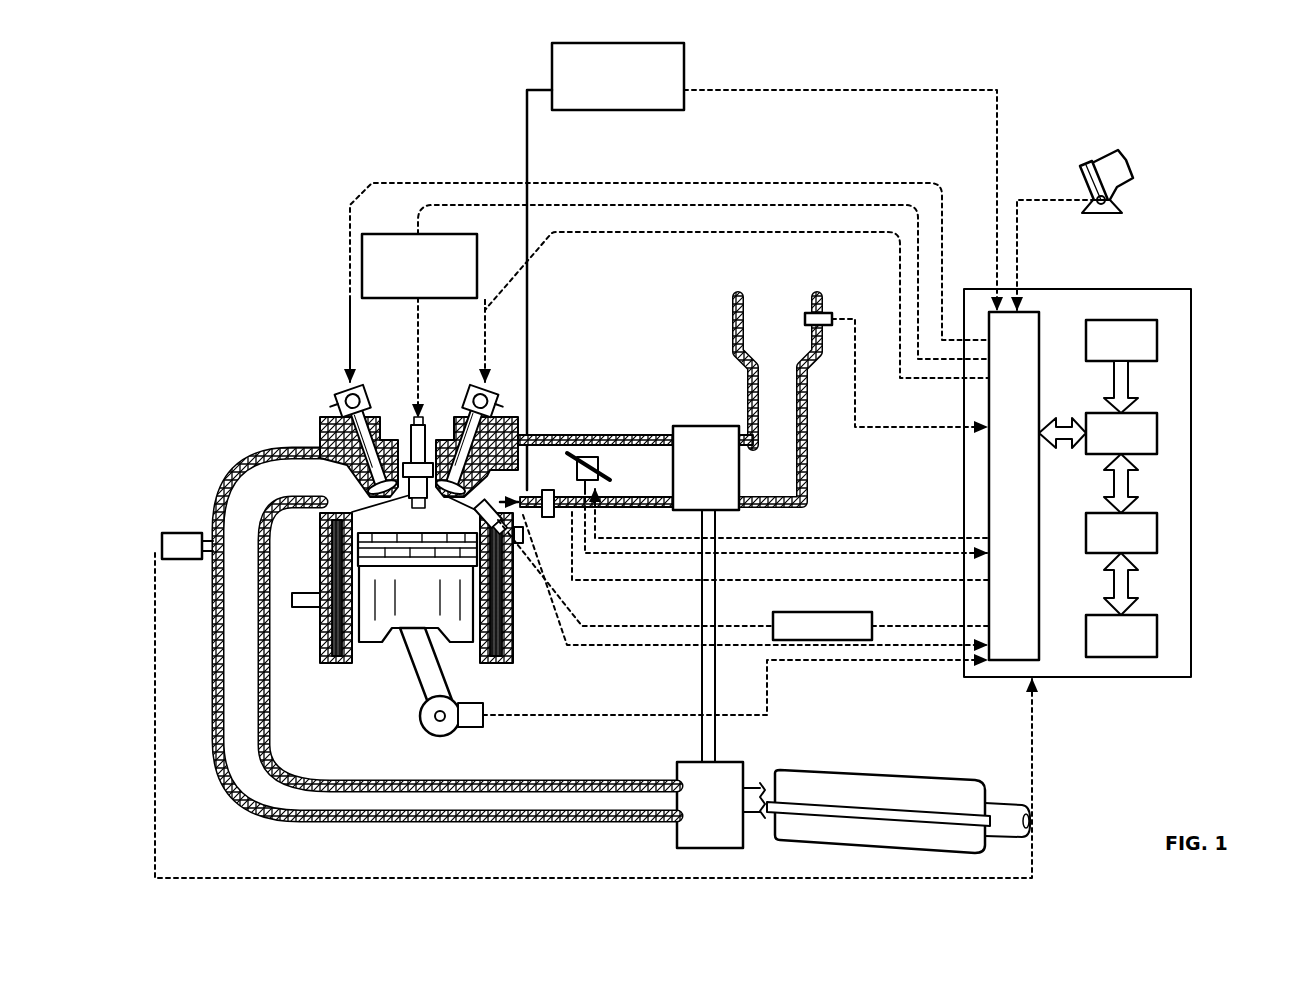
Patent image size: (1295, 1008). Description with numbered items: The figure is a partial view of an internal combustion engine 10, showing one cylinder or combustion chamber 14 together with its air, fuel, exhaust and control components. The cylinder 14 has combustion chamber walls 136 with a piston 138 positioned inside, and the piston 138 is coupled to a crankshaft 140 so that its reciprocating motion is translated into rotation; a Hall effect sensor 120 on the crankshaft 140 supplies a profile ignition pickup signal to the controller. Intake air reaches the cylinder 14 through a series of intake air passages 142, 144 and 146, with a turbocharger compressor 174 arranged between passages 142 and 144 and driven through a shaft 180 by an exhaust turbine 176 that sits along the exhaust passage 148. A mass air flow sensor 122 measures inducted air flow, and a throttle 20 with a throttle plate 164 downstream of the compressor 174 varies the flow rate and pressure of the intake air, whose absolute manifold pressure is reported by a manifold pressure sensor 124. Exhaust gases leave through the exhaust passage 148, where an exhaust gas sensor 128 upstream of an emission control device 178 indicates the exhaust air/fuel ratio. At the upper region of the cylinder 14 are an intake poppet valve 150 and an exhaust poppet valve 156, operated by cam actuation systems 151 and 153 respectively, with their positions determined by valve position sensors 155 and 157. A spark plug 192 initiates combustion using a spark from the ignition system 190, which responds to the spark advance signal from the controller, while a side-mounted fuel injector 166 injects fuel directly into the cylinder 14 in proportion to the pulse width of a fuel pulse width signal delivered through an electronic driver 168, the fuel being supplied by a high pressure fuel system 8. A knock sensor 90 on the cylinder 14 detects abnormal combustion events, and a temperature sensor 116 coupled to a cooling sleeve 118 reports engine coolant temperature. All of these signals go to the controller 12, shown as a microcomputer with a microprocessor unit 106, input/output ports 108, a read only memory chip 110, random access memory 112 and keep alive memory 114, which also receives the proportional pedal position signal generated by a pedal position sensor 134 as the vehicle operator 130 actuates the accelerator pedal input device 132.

The internal combustion engine 10 is at (148, 122).
The high pressure fuel system 8 is at (684, 68).
The ignition system 190 is at (372, 234).
The vehicle operator 130 is at (1128, 166).
The input device 132 is at (1083, 178).
The pedal position sensor 134 is at (1110, 200).
The controller 12 is at (1116, 469).
The input/output ports 108 is at (1040, 322).
The read only memory chip 110 is at (1157, 340).
The microprocessor unit 106 is at (1157, 430).
The random access memory 112 is at (1157, 533).
The keep alive memory 114 is at (1157, 637).
The intake air passage 142 is at (777, 399).
The mass air flow sensor 122 is at (818, 313).
The intake air passage 146 is at (595, 471).
The intake air passage 144 is at (690, 457).
The compressor 174 is at (693, 426).
The shaft 180 is at (716, 740).
The exhaust turbine 176 is at (677, 845).
The emission control device 178 is at (940, 780).
The exhaust passage 148 is at (447, 634).
The exhaust gas sensor 128 is at (162, 538).
The cylinder 14 is at (325, 535).
The combustion chamber walls 136 is at (352, 665).
The cooling sleeve 118 is at (512, 660).
The knock sensor 90 is at (310, 608).
The temperature sensor 116 is at (524, 560).
The piston 138 is at (400, 612).
The crankshaft 140 is at (430, 735).
The Hall effect sensor 120 is at (478, 728).
The spark plug 192 is at (412, 447).
The exhaust poppet valve 156 is at (375, 488).
The cam actuation system 153 is at (356, 388).
The valve position sensor 157 is at (342, 395).
The intake poppet valve 150 is at (457, 470).
The cam actuation system 151 is at (477, 388).
The valve position sensor 155 is at (500, 410).
The fuel injector 166 is at (488, 506).
The electronic driver 168 is at (776, 614).
The throttle 20 is at (590, 453).
The throttle plate 164 is at (566, 455).
The manifold pressure sensor 124 is at (554, 510).